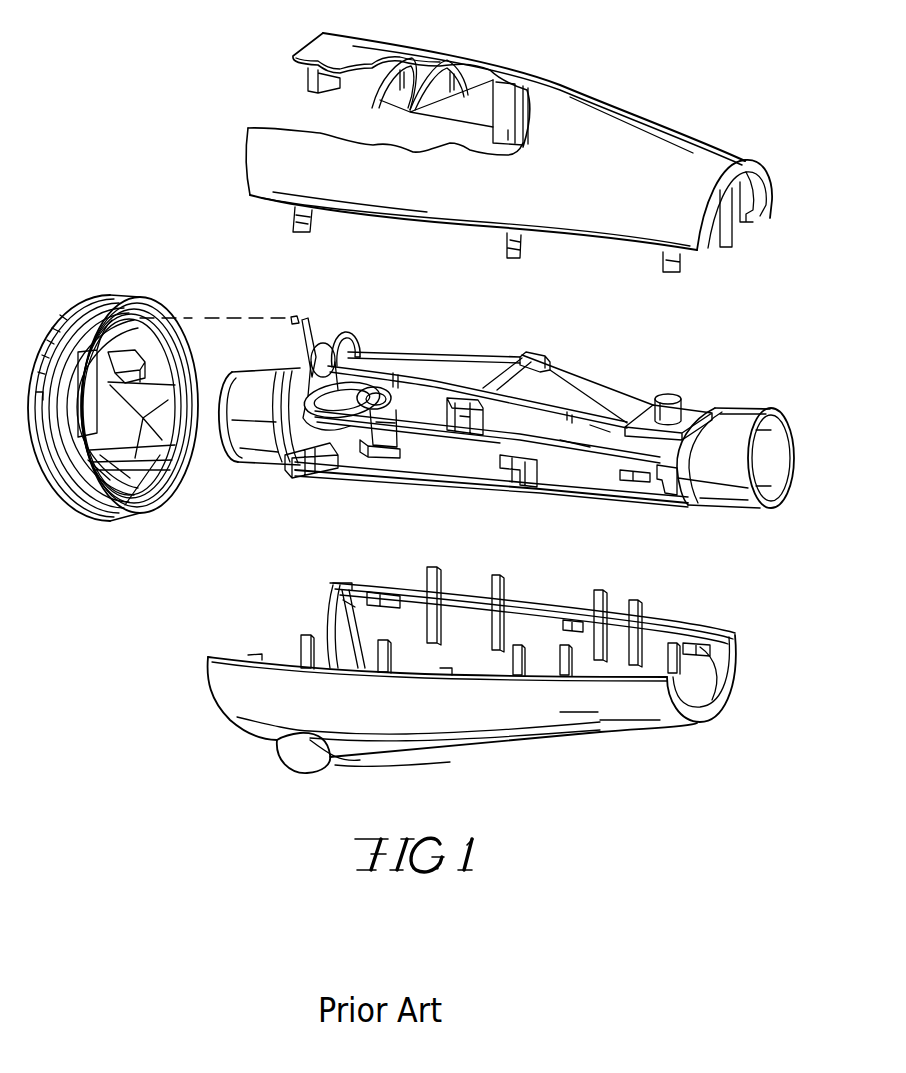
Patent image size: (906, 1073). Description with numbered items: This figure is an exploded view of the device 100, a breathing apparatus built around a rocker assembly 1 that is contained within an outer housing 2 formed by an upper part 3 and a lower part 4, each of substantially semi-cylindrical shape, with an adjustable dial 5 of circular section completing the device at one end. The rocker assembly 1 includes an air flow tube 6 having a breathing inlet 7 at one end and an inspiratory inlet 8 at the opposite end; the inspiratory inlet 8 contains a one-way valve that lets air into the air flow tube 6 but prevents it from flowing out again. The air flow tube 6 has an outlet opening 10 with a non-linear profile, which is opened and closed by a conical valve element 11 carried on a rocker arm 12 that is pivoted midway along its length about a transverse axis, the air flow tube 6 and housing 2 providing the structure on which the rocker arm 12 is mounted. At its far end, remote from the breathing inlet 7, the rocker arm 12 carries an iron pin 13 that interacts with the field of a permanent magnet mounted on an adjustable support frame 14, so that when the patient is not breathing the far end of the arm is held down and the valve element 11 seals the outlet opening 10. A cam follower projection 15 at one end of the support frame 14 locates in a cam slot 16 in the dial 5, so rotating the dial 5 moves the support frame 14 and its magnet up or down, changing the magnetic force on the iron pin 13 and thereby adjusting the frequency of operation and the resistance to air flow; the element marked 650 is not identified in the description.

The device 100 is at (556, 61).
The rocker assembly 1 is at (568, 360).
The outer housing 2 is at (624, 118).
The upper part 3 is at (600, 105).
The lower part 4 is at (600, 705).
The adjustable dial 5 is at (101, 274).
The air flow tube 6 is at (595, 482).
The breathing inlet 7 is at (743, 406).
The inspiratory inlet 8 is at (250, 462).
The outlet opening 10 is at (385, 412).
The conical valve element 11 is at (400, 406).
The rocker arm 12 is at (597, 392).
The iron pin 13 is at (341, 336).
The support frame 14 is at (340, 415).
The cam follower projection 15 is at (299, 314).
The cam slot 16 is at (141, 318).
The lens block 650 is at (145, 364).